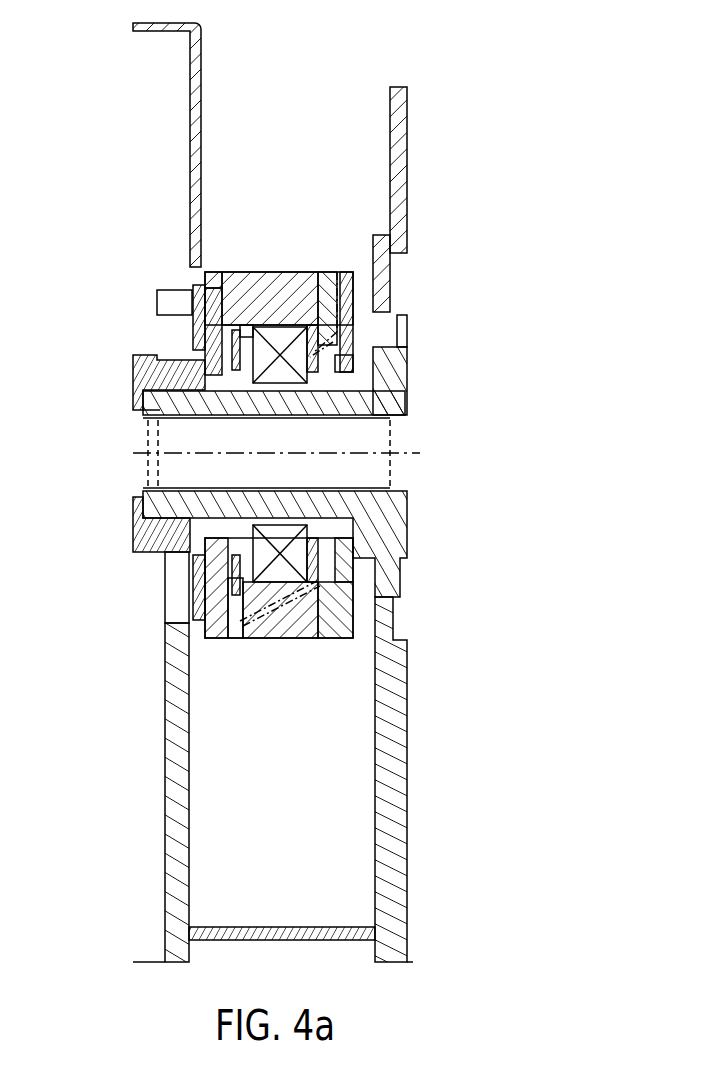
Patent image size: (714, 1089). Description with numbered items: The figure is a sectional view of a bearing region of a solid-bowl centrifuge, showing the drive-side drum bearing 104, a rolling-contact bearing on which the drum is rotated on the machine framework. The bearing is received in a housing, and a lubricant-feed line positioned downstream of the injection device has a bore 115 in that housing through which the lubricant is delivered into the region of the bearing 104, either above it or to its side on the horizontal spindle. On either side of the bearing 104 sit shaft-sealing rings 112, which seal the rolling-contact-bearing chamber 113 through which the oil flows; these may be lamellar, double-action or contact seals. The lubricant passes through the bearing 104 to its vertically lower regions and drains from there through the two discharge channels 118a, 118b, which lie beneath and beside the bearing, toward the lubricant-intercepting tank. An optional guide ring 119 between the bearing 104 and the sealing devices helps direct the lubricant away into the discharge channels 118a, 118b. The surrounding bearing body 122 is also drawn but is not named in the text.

The drum bearing 104 is at (353, 338).
The shaft-sealing ring 112 is at (203, 368).
The rolling-contact-bearing chamber 113 is at (153, 413).
The bore 115 is at (349, 300).
The discharge channel 118a is at (207, 625).
The discharge channel 118b is at (317, 598).
The guide ring 119 is at (232, 326).
The bearing housing block 122 is at (327, 298).